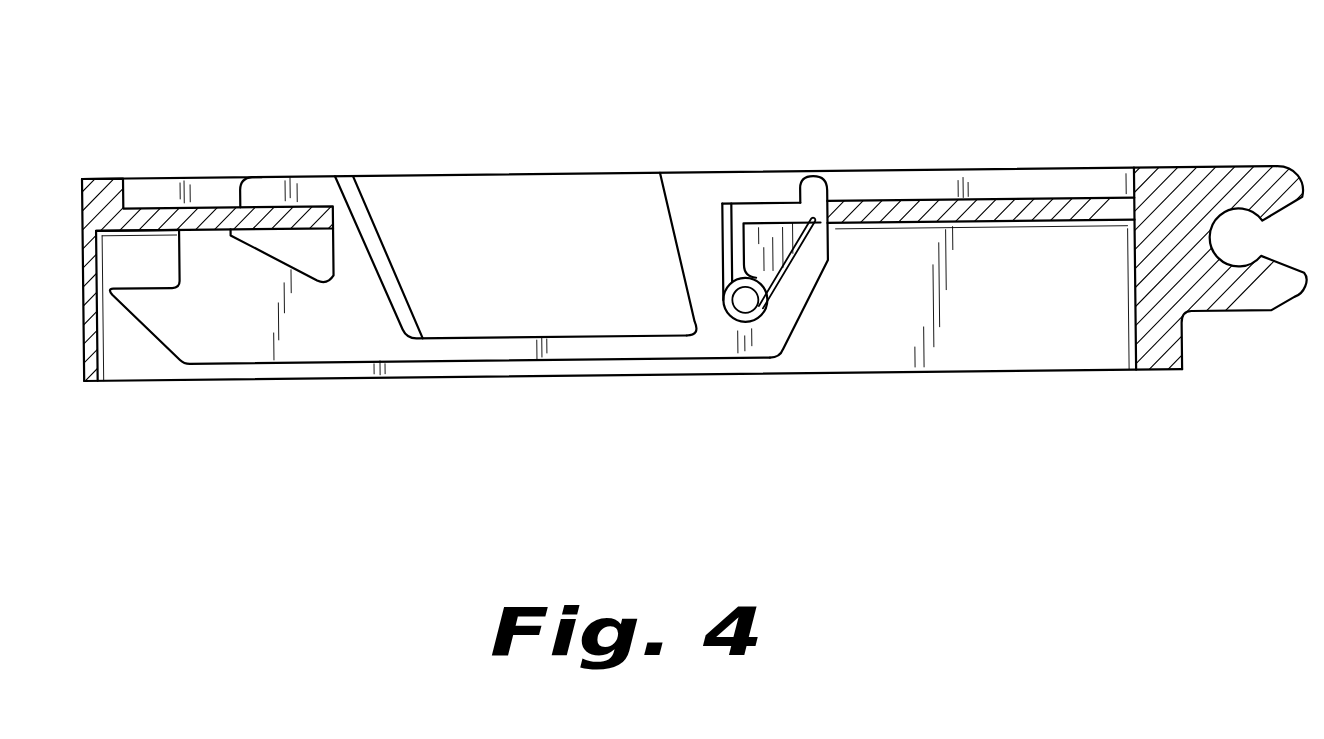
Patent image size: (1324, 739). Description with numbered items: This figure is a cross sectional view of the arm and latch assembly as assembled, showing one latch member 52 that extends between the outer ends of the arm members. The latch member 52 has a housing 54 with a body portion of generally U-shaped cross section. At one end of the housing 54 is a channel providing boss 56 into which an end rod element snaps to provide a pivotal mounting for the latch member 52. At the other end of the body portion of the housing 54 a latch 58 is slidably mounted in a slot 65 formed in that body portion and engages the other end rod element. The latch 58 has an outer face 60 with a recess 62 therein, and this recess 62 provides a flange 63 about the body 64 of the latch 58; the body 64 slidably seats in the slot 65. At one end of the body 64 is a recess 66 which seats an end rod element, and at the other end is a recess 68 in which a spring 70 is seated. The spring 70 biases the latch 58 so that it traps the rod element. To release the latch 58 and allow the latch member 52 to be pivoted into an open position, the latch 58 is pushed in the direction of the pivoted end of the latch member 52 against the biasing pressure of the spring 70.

The latch member 52 is at (1069, 152).
The housing 54 is at (593, 382).
The channel providing boss 56 is at (1252, 296).
The latch 58 is at (333, 322).
The outer face 60 is at (323, 180).
The recess 62 is at (378, 231).
The flange 63 is at (662, 180).
The body 64 is at (260, 196).
The slot 65 is at (801, 208).
The recess 66 is at (173, 261).
The recess 68 is at (757, 247).
The spring 70 is at (800, 288).